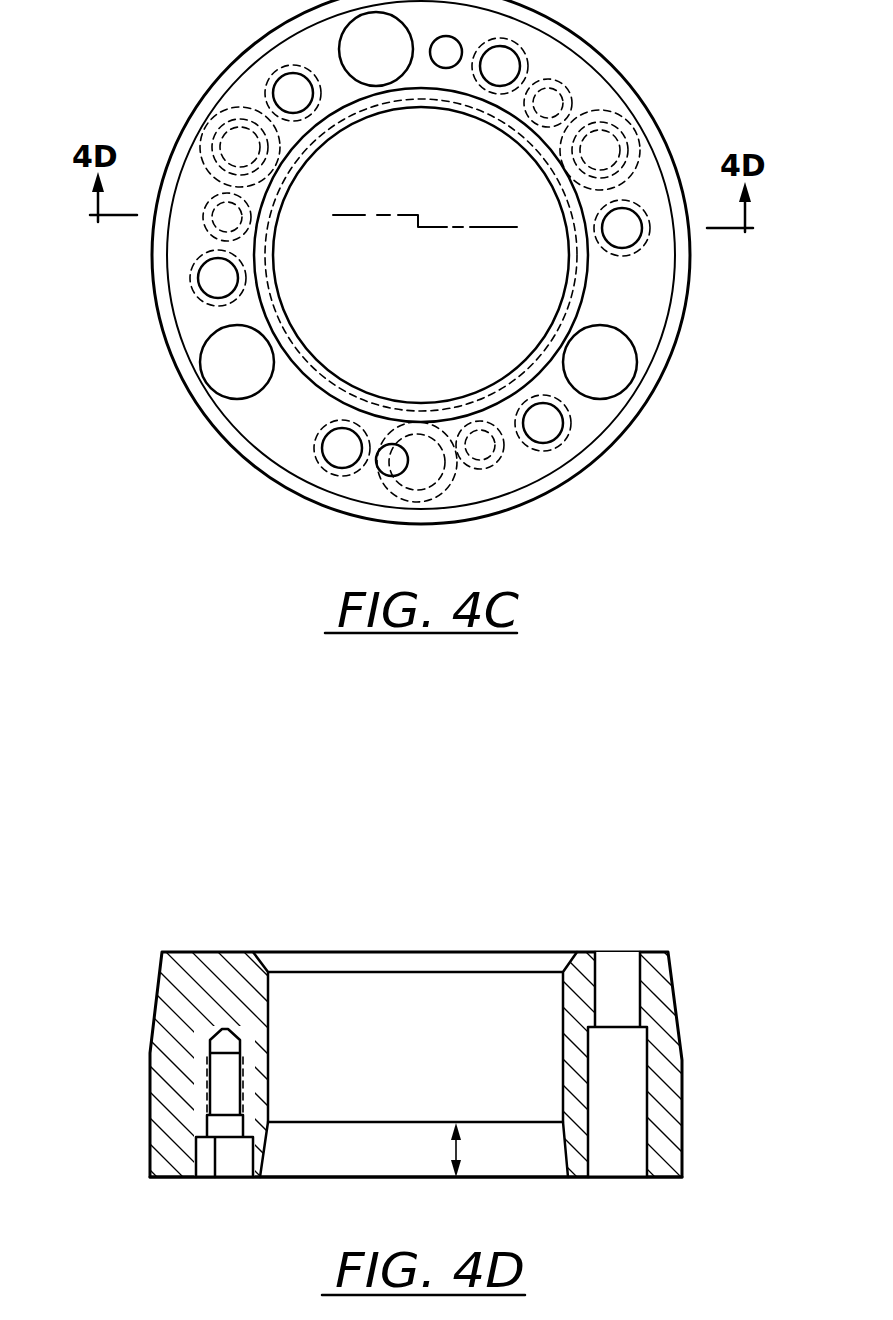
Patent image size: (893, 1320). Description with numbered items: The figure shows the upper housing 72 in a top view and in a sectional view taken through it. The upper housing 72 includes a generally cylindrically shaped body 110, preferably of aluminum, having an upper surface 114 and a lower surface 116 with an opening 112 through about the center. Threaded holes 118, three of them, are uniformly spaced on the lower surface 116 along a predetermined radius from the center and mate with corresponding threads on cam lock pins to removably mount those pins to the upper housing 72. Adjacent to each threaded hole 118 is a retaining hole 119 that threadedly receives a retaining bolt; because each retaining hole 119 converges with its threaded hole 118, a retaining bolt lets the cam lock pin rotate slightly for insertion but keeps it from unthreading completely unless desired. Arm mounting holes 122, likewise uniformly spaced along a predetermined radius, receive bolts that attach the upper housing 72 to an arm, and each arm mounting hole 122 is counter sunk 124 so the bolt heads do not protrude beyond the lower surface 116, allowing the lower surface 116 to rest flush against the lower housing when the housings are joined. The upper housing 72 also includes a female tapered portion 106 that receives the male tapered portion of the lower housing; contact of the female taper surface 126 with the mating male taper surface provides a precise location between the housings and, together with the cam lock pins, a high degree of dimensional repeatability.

In FIG. 4C, the upper housing 72 is at (714, 70).
In FIG. 4D, the upper housing 72 is at (518, 912).
In FIG. 4D, the female tapered portion 106 is at (455, 1152).
In FIG. 4D, the body 110 is at (683, 1100).
In FIG. 4C, the opening 112 is at (462, 289).
In FIG. 4D, the opening 112 is at (380, 983).
In FIG. 4C, the upper surface 114 is at (650, 314).
In FIG. 4D, the upper surface 114 is at (203, 950).
In FIG. 4D, the lower surface 116 is at (185, 1178).
In FIG. 4C, the threaded holes 118 is at (207, 117).
In FIG. 4C, the retaining holes 119 is at (207, 227).
In FIG. 4D, the retaining holes 119 is at (237, 1165).
In FIG. 4C, the arm mounting holes 122 is at (285, 77).
In FIG. 4D, the arm mounting holes 122 is at (617, 1162).
In FIG. 4D, the counter sink 124 is at (644, 1032).
In FIG. 4D, the female taper surface 126 is at (567, 1158).